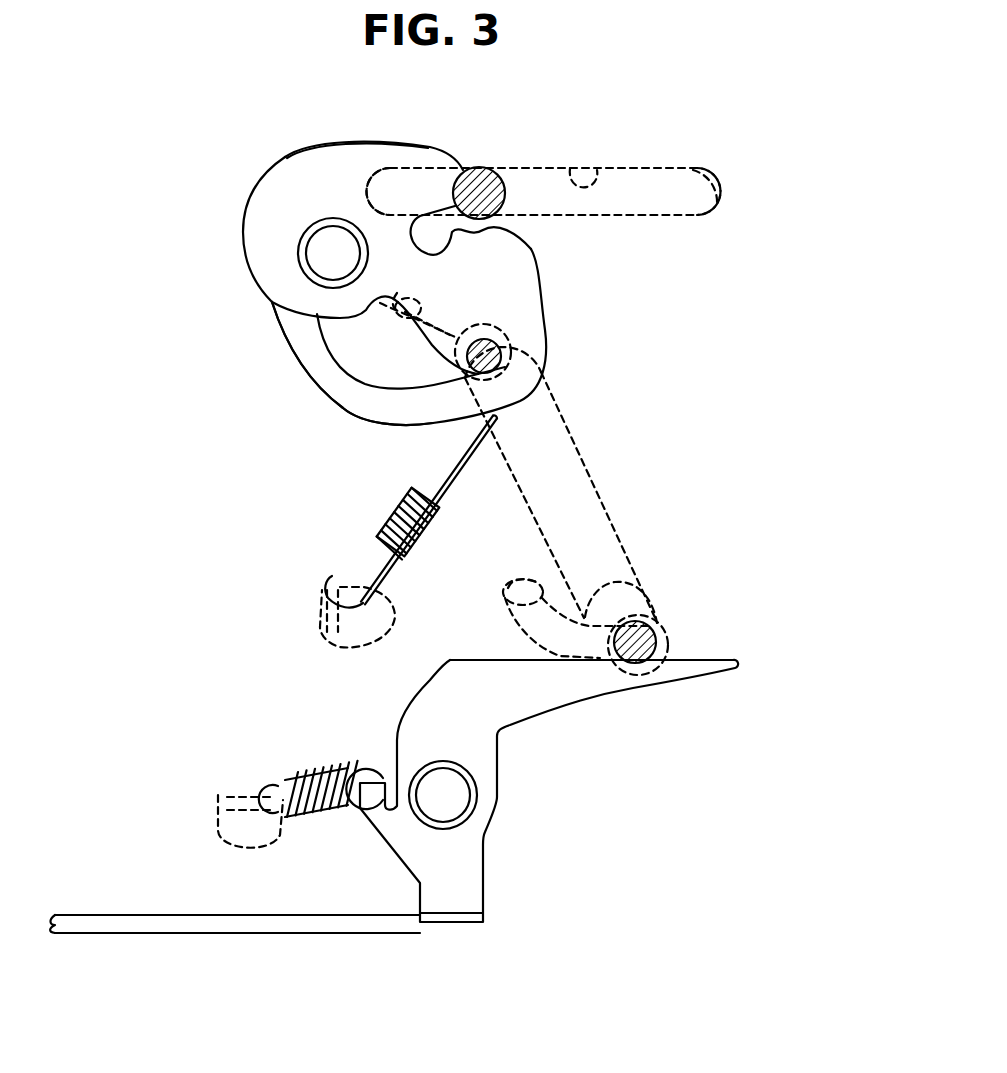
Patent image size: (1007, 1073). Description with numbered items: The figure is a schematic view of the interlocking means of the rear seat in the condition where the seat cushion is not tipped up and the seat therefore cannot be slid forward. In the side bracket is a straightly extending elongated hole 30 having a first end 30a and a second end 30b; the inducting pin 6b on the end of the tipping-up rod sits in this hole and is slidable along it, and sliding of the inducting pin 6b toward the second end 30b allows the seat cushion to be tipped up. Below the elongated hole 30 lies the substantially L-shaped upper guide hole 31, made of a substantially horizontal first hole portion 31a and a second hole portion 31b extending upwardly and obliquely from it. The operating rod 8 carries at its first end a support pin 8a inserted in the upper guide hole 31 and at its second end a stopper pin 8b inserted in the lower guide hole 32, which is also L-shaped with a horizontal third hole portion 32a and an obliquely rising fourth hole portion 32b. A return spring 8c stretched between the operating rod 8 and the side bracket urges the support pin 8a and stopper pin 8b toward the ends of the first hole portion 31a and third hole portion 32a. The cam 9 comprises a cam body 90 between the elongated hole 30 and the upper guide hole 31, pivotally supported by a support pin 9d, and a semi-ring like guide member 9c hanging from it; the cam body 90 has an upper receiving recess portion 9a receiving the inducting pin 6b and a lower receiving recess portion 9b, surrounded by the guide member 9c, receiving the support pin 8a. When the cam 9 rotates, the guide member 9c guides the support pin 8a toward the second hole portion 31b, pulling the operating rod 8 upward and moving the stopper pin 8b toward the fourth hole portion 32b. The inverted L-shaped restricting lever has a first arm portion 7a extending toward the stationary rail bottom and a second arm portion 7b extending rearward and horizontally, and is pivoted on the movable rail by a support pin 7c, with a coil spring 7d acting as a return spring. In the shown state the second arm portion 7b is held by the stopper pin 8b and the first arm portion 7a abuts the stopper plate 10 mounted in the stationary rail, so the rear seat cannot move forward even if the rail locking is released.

The cam 9 is at (288, 150).
The cam body 90 is at (270, 206).
The upper receiving recess portion 9a is at (531, 249).
The lower receiving recess portion 9b is at (362, 318).
The semi-ring like guide member 9c is at (328, 394).
The support pin 9d is at (330, 256).
The inducting pin 6b is at (493, 168).
The elongated hole 30 is at (597, 170).
The first end 30a is at (697, 168).
The second end 30b is at (382, 170).
The upper guide hole 31 is at (441, 330).
The first hole portion 31a is at (432, 366).
The second hole portion 31b is at (418, 313).
The support pin 8a is at (505, 367).
The operating rod 8 is at (582, 456).
The stopper pin 8b is at (645, 628).
The return spring 8c is at (383, 511).
The lower guide hole 32 is at (520, 633).
The third hole portion 32a is at (587, 588).
The fourth hole portion 32b is at (507, 593).
The second arm portion 7b is at (725, 672).
The first arm portion 7a is at (472, 902).
The support pin 7c is at (452, 797).
The coil spring 7d is at (312, 777).
The stopper plate 10 is at (178, 914).